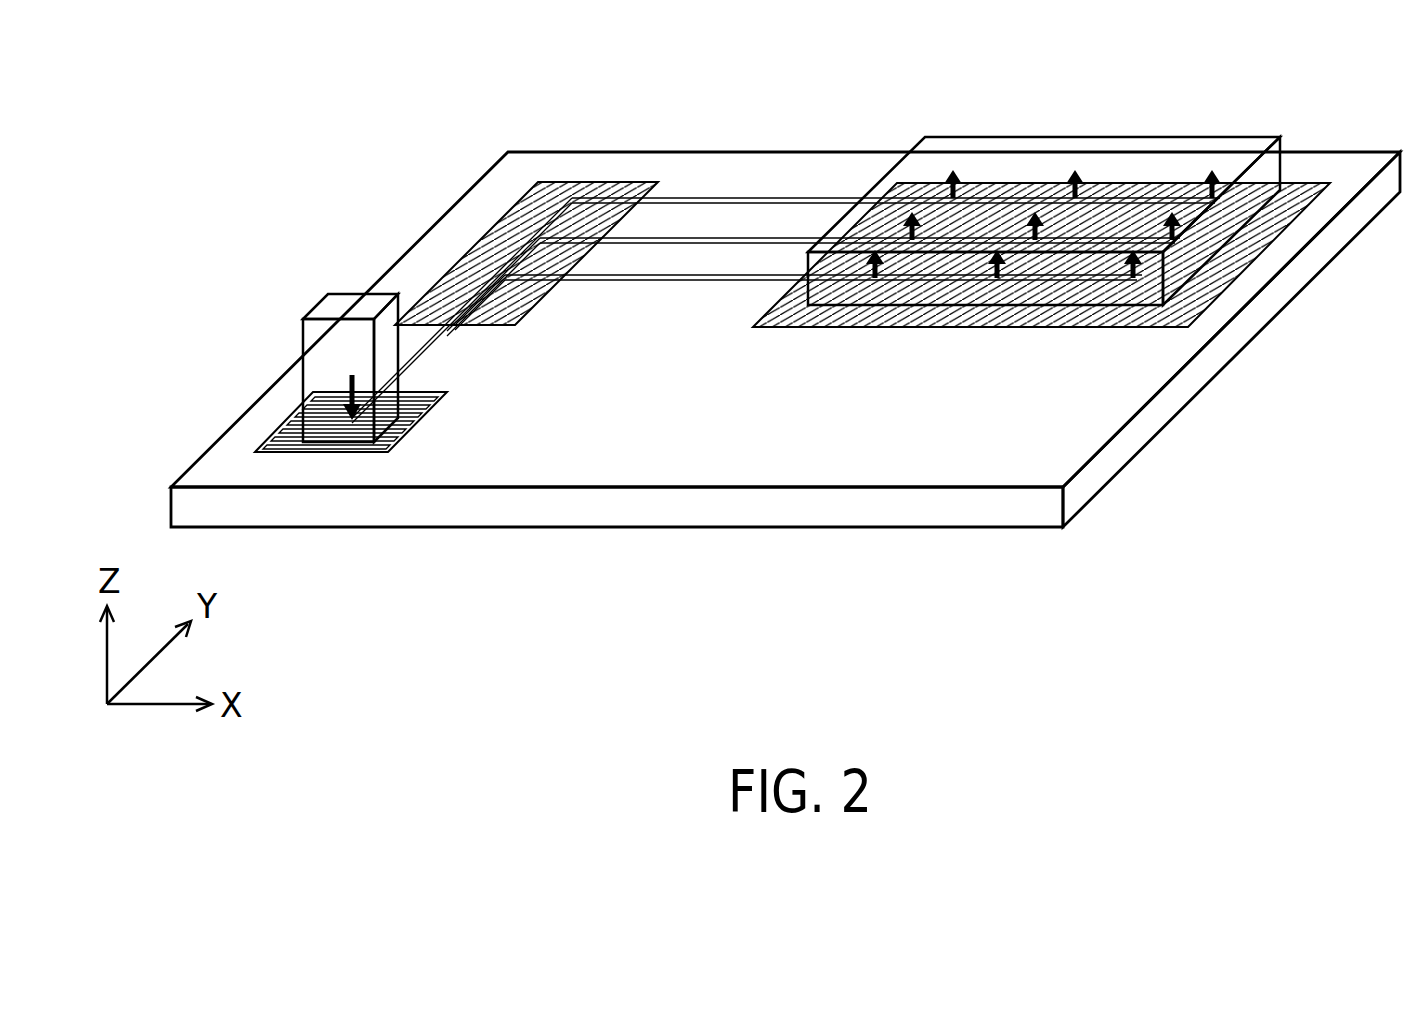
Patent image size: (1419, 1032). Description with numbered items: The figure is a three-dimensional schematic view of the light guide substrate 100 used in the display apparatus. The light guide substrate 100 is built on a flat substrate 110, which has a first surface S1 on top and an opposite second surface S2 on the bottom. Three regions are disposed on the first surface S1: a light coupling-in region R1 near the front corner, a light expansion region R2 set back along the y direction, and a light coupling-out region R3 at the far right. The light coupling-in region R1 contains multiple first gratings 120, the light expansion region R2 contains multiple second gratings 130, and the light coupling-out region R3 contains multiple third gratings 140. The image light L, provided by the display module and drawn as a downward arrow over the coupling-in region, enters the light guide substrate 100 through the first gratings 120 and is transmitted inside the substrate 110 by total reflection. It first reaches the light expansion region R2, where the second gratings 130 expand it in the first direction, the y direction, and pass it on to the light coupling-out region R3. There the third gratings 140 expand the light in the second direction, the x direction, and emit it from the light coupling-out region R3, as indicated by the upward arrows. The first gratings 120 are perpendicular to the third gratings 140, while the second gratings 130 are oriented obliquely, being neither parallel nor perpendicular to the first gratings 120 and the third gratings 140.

The light guide substrate 100 is at (1397, 599).
The substrate 110 is at (888, 507).
The first gratings 120 is at (268, 436).
The second gratings 130 is at (433, 282).
The third gratings 140 is at (1310, 188).
The image light L is at (302, 377).
The light coupling-in region R1 is at (330, 462).
The light expansion region R2 is at (600, 172).
The light coupling-out region R3 is at (1185, 160).
The first surface S1 is at (745, 222).
The second surface S2 is at (627, 530).